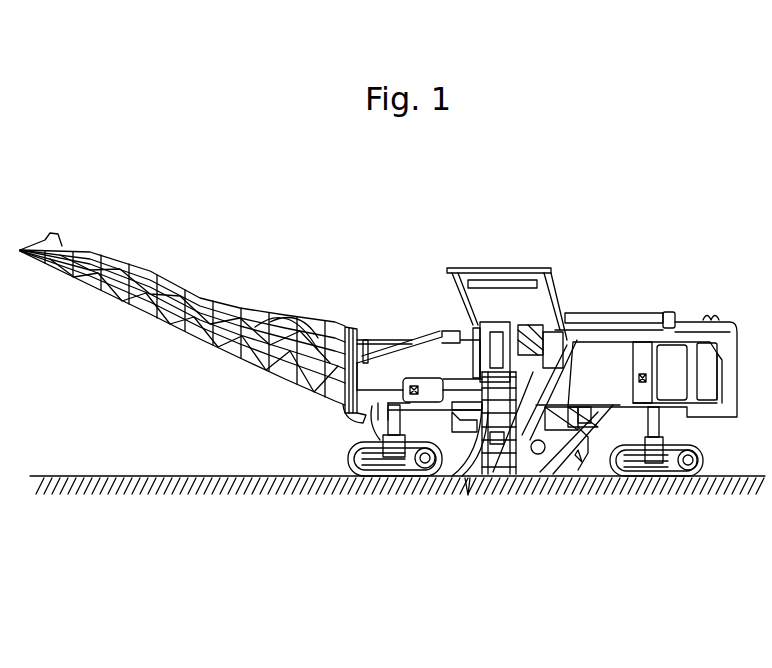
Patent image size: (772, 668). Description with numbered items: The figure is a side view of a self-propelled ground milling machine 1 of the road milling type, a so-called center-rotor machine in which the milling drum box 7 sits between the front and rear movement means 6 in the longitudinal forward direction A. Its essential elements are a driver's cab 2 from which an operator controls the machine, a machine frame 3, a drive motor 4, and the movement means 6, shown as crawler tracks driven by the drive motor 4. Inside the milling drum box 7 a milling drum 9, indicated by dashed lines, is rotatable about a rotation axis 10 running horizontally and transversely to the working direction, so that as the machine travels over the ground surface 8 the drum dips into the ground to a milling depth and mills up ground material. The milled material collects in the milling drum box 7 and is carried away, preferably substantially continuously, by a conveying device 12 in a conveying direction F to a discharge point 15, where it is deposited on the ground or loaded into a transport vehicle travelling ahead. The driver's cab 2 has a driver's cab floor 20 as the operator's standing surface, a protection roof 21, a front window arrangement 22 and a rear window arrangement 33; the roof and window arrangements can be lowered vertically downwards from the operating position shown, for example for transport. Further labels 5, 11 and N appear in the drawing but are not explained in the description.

The ground milling machine 1 is at (621, 138).
The driver's cab 2 is at (504, 258).
The machine frame 3 is at (408, 362).
The drive motor 4 is at (613, 357).
The discharge conveyor 5 is at (193, 284).
The movement means 6 is at (368, 478).
The milling drum box 7 is at (593, 480).
The ground surface 8 is at (248, 496).
The milling drum 9 is at (553, 480).
The rotation axis 10 is at (547, 477).
The lifting column 11 is at (455, 476).
The conveying device 12 is at (180, 285).
The discharge point 15 is at (45, 240).
The driver's cab floor 20 is at (483, 480).
The protection roof 21 is at (515, 296).
The front window arrangement 22 is at (470, 318).
The rear window arrangement 33 is at (553, 288).
The reference axis N is at (467, 477).
The conveying direction F is at (225, 413).
The forward direction A is at (215, 446).